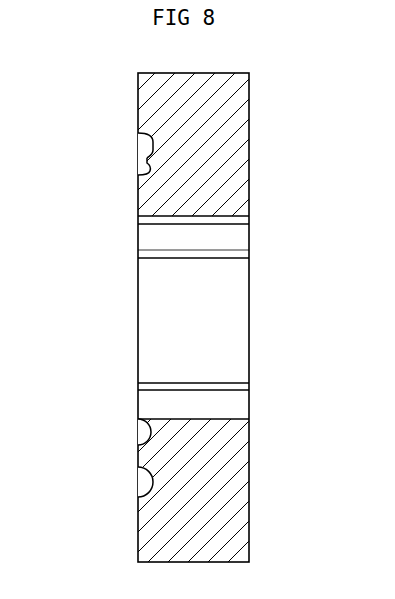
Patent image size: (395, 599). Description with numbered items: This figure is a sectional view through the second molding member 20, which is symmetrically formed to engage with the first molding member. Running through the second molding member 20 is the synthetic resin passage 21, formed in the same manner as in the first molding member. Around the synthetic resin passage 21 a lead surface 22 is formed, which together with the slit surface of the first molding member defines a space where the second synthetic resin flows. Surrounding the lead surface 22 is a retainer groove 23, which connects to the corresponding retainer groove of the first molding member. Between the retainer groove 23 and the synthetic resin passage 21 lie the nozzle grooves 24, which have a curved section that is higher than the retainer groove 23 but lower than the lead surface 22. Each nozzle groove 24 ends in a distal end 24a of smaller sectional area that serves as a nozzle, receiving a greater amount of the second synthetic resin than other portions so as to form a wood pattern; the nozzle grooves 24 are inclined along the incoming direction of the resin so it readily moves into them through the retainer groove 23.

The second molding member 20 is at (246, 129).
The synthetic resin passage 21 is at (235, 323).
The lead surface 22 is at (138, 206).
The retainer groove 23 is at (146, 139).
The nozzle groove 24 is at (146, 172).
The distal end 24a is at (146, 431).